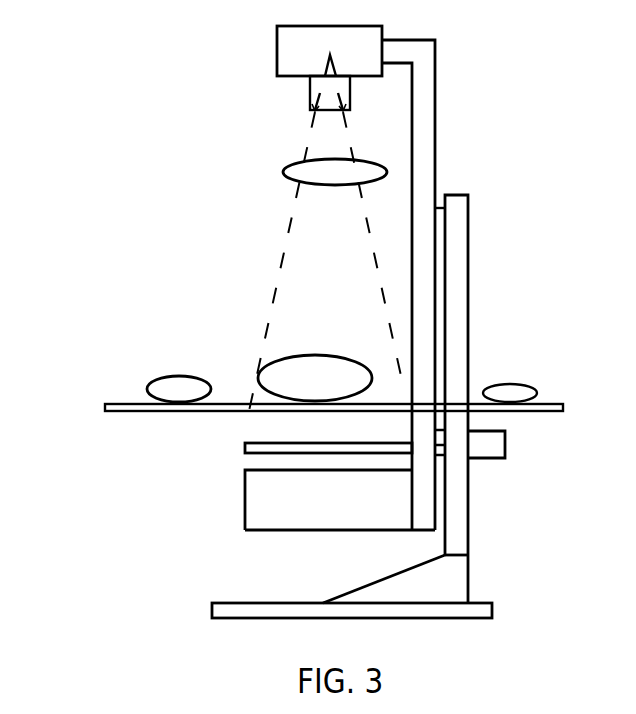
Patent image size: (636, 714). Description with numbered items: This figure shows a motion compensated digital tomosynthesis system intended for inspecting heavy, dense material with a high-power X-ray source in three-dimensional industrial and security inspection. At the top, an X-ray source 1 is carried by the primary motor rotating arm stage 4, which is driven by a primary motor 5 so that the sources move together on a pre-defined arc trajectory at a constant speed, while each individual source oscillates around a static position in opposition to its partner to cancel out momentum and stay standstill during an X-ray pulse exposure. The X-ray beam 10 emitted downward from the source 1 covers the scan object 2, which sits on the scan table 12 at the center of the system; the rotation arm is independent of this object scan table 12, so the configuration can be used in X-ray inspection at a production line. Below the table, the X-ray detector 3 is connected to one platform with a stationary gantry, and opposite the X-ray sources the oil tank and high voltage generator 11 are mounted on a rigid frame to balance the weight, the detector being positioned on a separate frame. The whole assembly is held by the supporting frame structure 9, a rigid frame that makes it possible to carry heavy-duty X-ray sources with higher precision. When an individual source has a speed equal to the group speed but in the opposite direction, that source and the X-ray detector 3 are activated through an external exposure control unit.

The X-ray source 1 is at (277, 75).
The X-ray beam 10 is at (283, 172).
The primary motor rotating arm stage 4 is at (422, 135).
The scan object 2 is at (157, 376).
The scan table 12 is at (105, 407).
The X-ray detector 3 is at (245, 445).
The high voltage generator 11 is at (243, 530).
The primary motor 5 is at (505, 458).
The supporting frame structure 9 is at (457, 520).